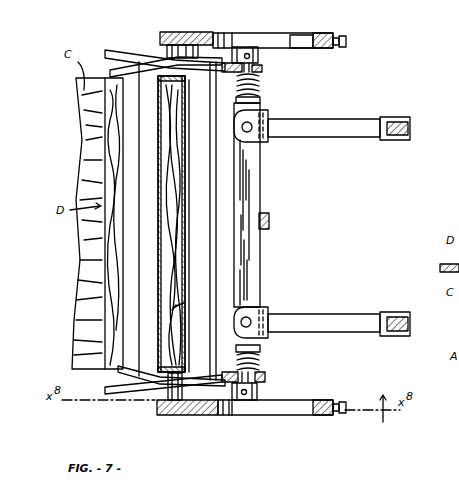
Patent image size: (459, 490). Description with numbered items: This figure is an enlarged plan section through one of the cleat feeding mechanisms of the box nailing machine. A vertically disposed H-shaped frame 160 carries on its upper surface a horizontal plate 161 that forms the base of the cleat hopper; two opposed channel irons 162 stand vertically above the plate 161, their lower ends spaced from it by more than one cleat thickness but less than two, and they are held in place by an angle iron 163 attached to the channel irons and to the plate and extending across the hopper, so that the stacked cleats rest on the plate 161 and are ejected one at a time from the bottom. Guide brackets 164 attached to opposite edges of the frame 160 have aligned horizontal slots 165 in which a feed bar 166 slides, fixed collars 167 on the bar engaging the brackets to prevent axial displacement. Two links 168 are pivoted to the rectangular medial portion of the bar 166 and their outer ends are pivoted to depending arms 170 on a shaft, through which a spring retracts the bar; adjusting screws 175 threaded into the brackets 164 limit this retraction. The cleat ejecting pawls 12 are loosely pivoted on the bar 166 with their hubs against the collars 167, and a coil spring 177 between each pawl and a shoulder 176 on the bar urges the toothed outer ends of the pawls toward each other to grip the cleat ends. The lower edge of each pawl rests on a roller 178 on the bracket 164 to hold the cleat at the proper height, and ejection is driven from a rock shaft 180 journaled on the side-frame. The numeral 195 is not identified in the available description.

The cleat ejecting pawl 12 is at (222, 64).
The H-shaped frame 160 is at (164, 50).
The horizontal plate 161 is at (140, 142).
The channel iron 162 is at (150, 62).
The angle iron 163 is at (190, 201).
The guide bracket 164 is at (178, 33).
The horizontal slot 165 is at (278, 407).
The feed bar 166 is at (240, 198).
The fixed collar 167 is at (259, 59).
The link 168 is at (341, 134).
The depending arm 170 is at (411, 126).
The adjusting screw 175 is at (347, 41).
The shoulder 176 is at (261, 100).
The coil spring 177 is at (260, 88).
The roller 178 is at (183, 46).
The rock shaft 180 is at (270, 222).
The bar portion 195 is at (296, 36).